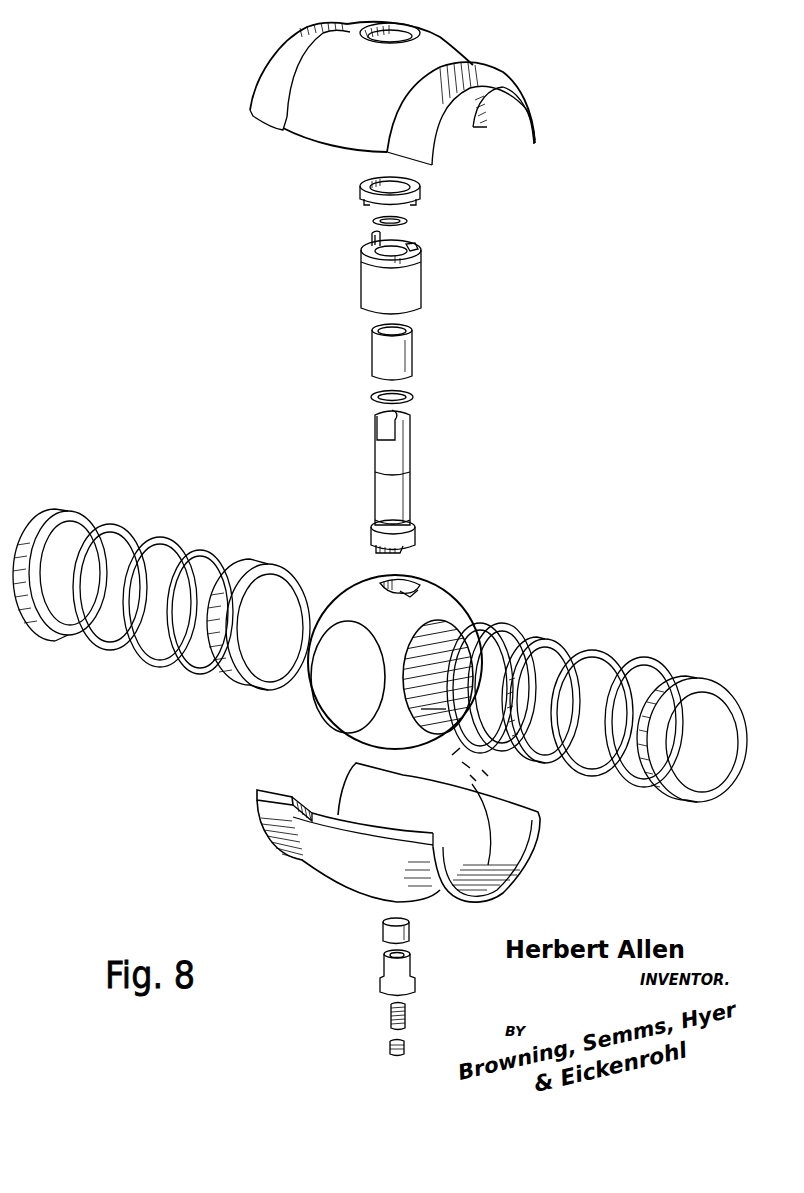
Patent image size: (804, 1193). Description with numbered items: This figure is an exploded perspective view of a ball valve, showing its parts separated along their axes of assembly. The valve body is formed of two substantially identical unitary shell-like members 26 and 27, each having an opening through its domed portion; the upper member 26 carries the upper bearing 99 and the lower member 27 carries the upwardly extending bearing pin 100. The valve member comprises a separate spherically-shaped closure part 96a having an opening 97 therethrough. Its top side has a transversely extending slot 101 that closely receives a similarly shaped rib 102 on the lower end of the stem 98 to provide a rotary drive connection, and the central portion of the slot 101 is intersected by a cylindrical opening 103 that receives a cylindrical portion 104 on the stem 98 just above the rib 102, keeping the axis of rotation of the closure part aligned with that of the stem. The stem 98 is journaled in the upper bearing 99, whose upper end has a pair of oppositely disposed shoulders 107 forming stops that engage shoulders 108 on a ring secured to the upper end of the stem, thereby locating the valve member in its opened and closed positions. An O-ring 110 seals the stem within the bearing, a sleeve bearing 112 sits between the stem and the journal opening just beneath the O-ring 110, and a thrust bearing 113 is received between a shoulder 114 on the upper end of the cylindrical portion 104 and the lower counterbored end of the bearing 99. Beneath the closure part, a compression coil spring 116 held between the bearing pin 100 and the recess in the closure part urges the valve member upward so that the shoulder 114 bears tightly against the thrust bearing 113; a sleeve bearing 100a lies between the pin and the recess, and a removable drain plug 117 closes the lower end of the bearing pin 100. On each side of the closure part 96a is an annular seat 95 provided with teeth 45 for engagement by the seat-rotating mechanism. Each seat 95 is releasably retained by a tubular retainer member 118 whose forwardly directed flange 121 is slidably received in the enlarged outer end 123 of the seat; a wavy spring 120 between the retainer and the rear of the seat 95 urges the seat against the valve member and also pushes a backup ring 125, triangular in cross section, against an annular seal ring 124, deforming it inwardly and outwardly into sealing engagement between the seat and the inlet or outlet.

The shell-like member 26 is at (455, 48).
The shell-like member 27 is at (310, 862).
The teeth 45 is at (395, 662).
The annular seat 95 is at (233, 692).
The spherically-shaped closure part 96a is at (333, 724).
The opening 97 is at (475, 626).
The stem 98 is at (411, 443).
The upper bearing 99 is at (421, 293).
The bearing pin 100 is at (381, 968).
The sleeve bearing 100a is at (382, 933).
The slot 101 is at (412, 582).
The rib 102 is at (380, 549).
The cylindrical opening 103 is at (400, 592).
The cylindrical portion 104 is at (416, 533).
The shoulders 107 is at (370, 242).
The shoulders 108 is at (410, 200).
The O-ring 110 is at (374, 221).
The sleeve bearing 112 is at (375, 358).
The thrust bearing 113 is at (414, 398).
The shoulder 114 is at (378, 522).
The compression coil spring 116 is at (407, 1020).
The drain plug 117 is at (389, 1046).
The tubular retainer member 118 is at (693, 677).
The wavy spring 120 is at (657, 661).
The flange 121 is at (623, 788).
The outer end of the seat 123 is at (523, 628).
The seal ring 124 is at (563, 641).
The backup ring 125 is at (607, 657).